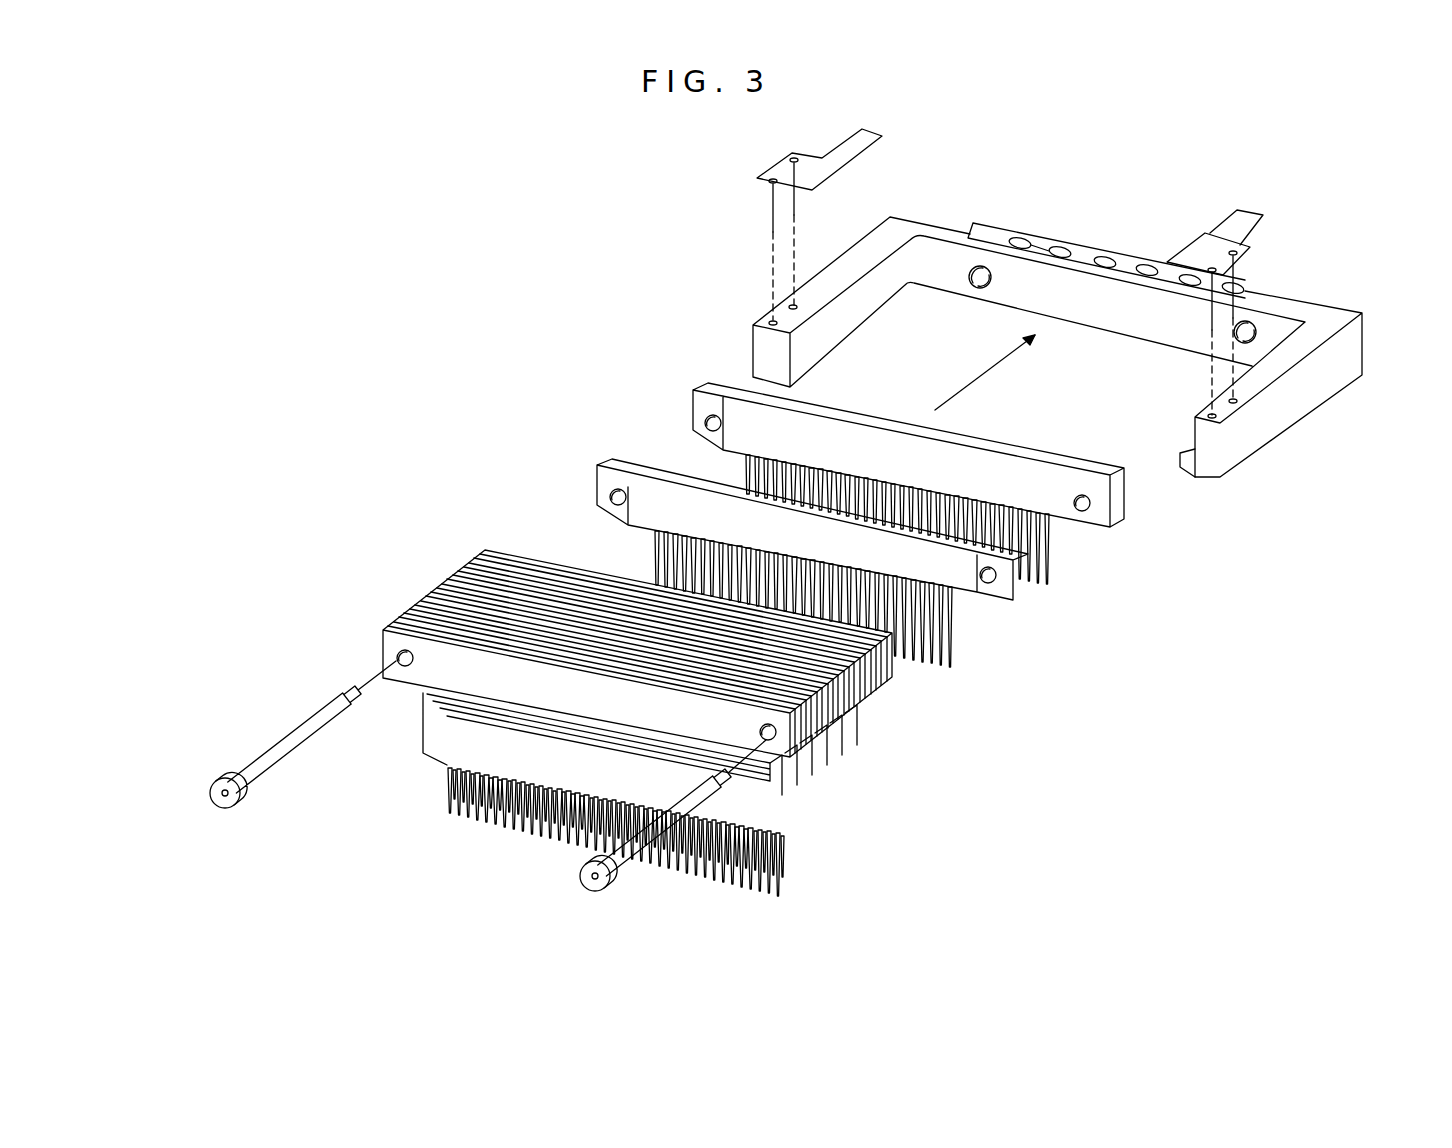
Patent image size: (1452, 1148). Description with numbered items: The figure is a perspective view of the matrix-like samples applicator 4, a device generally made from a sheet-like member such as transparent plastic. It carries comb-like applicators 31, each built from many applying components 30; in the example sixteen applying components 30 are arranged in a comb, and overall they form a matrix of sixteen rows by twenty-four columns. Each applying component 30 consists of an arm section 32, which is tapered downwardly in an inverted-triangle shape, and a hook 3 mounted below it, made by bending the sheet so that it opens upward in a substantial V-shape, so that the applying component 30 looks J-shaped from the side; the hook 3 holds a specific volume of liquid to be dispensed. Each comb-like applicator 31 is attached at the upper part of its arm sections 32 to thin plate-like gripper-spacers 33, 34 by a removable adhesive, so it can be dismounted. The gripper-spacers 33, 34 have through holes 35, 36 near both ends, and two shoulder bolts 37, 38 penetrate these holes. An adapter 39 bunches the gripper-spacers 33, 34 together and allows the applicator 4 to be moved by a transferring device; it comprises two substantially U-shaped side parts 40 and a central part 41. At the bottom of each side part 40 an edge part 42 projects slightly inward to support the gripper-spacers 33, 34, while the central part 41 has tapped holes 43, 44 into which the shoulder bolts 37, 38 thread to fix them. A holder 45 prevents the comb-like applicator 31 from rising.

The hook 3 is at (448, 825).
The matrix-like samples applicator 4 is at (681, 220).
The applying component 30 is at (380, 778).
The comb-like applicator 31 is at (766, 808).
The arm section 32 is at (442, 786).
The gripper-spacer 33 is at (432, 642).
The gripper-spacer 34 is at (726, 406).
The through hole 35 is at (396, 657).
The through hole 36 is at (774, 742).
The shoulder bolt 37 is at (220, 780).
The shoulder bolt 38 is at (611, 866).
The adapter 39 is at (1367, 462).
The side part 40 is at (1297, 406).
The central part 41 is at (1152, 323).
The edge part 42 is at (1182, 468).
The tapped hole 43 is at (972, 268).
The tapped hole 44 is at (1250, 324).
The holder 45 is at (1219, 233).